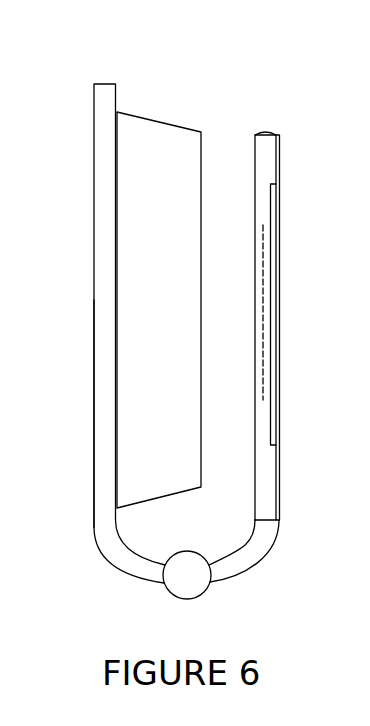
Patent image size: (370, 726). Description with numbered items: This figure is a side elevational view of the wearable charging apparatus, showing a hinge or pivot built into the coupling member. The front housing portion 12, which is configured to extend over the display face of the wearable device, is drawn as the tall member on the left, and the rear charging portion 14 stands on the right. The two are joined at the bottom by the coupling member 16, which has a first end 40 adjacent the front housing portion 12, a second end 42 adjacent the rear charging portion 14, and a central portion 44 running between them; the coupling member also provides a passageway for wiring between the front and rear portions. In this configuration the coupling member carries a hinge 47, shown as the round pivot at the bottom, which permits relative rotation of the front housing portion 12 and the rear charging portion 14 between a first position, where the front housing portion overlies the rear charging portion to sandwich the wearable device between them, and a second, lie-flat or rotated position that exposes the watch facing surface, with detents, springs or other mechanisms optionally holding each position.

The front housing portion 12 is at (84, 348).
The rear charging portion 14 is at (281, 313).
The coupling member 16 is at (110, 577).
The first end 40 is at (78, 487).
The second end 42 is at (281, 520).
The central portion 44 is at (257, 563).
The hinge 47 is at (160, 610).